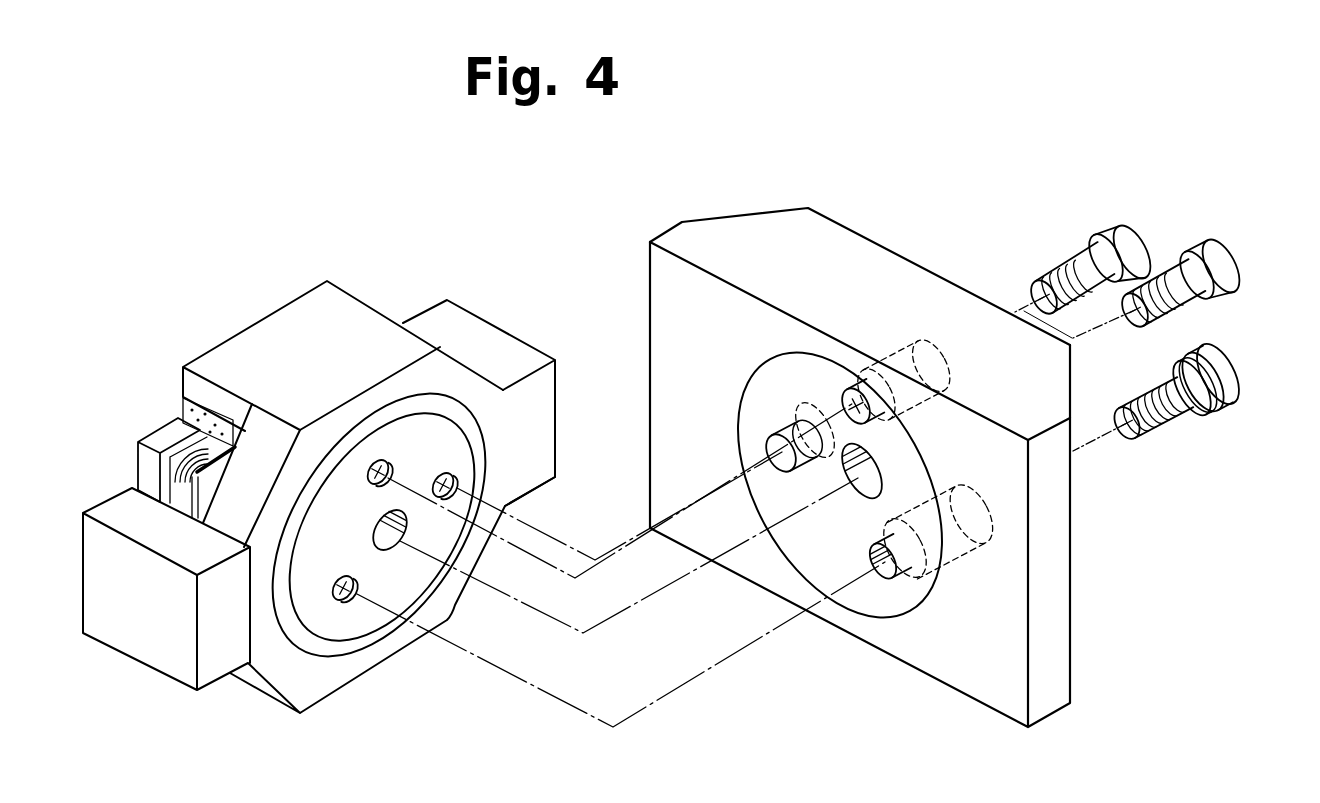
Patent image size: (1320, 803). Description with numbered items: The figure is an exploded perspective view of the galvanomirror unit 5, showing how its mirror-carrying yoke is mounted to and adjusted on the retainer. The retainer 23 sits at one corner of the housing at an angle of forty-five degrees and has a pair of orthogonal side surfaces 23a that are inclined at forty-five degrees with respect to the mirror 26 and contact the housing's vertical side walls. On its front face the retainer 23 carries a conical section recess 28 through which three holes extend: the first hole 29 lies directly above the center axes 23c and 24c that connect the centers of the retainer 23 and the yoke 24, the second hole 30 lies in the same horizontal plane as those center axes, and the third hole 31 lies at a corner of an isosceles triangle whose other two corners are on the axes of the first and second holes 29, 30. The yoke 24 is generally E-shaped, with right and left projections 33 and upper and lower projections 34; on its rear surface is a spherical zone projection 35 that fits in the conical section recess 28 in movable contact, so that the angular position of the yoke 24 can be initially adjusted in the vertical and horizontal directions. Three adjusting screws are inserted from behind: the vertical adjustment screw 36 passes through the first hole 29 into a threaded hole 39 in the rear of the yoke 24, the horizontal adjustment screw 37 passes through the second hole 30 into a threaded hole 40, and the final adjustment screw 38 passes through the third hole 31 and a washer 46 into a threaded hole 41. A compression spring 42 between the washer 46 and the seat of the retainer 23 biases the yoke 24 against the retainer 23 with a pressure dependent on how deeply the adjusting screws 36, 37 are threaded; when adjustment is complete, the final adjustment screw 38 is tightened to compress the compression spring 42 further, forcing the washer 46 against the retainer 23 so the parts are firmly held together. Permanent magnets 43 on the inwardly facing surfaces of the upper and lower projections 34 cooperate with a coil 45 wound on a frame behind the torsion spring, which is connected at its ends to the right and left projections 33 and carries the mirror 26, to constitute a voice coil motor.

The galvanomirror unit 5 is at (1026, 137).
The retainer 23 is at (1063, 607).
The side surfaces 23a is at (753, 212).
The center axis 23c is at (862, 494).
The yoke 24 is at (455, 292).
The center axis 24c is at (395, 546).
The mirror 26 is at (135, 444).
The conical section recess 28 is at (867, 600).
The first hole 29 is at (856, 388).
The second hole 30 is at (773, 462).
The third hole 31 is at (888, 584).
The right and left projections 33 is at (148, 656).
The upper and lower projections 34 is at (263, 345).
The spherical zone projection 35 is at (338, 652).
The vertical adjustment screw 36 is at (1183, 250).
The horizontal adjustment screw 37 is at (1118, 230).
The final adjustment screw 38 is at (1205, 378).
The threaded hole 39 is at (375, 462).
The threaded hole 40 is at (456, 482).
The threaded hole 41 is at (357, 598).
The compression spring 42 is at (1165, 423).
The permanent magnets 43 is at (185, 402).
The coil 45 is at (168, 480).
The washer 46 is at (1222, 404).